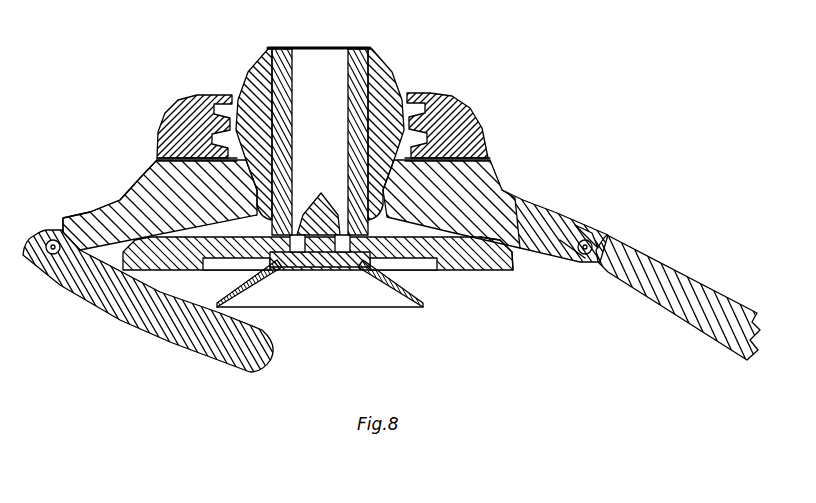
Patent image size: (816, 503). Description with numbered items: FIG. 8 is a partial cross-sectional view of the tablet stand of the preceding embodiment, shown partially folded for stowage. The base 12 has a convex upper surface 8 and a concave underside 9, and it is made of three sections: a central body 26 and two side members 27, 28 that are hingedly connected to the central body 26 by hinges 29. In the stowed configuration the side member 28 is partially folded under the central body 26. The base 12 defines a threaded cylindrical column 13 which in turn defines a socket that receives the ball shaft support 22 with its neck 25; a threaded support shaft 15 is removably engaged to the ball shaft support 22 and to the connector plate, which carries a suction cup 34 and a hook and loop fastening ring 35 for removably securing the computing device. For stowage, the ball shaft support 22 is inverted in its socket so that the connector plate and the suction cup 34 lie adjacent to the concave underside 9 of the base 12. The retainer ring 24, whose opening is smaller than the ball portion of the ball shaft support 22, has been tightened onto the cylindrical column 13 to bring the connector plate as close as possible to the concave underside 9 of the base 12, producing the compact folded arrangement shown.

The convex upper surface 8 is at (527, 200).
The concave underside 9 is at (570, 240).
The base 12 is at (552, 218).
The threaded cylindrical column 13 is at (430, 175).
The threaded support shaft 15 is at (359, 53).
The ball shaft support 22 is at (390, 83).
The retainer ring 24 is at (460, 125).
The neck 25 is at (375, 217).
The central body 26 is at (120, 205).
The side member 27 is at (693, 310).
The side member 28 is at (138, 308).
The hinge 29 is at (585, 256).
The suction cup 34 is at (260, 298).
The hook and loop fastening ring 35 is at (470, 268).